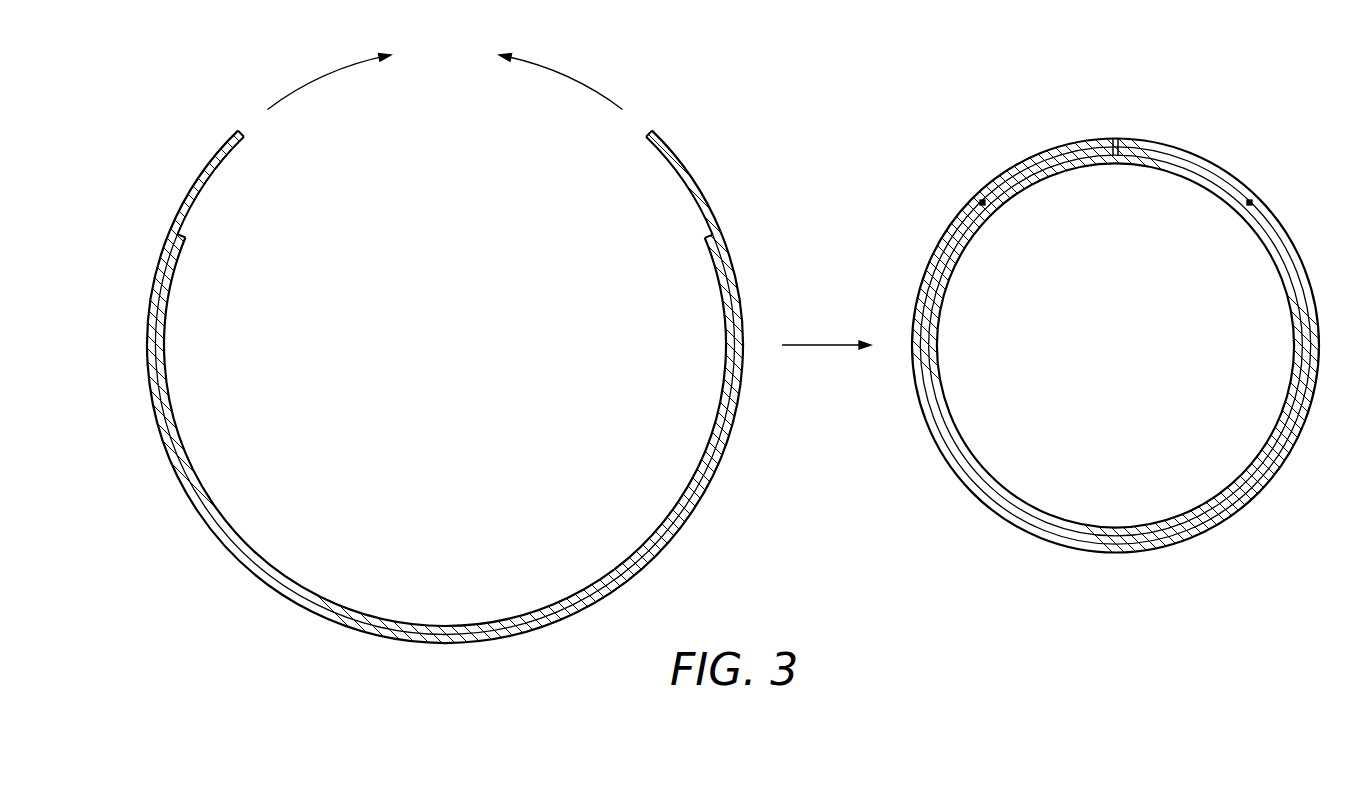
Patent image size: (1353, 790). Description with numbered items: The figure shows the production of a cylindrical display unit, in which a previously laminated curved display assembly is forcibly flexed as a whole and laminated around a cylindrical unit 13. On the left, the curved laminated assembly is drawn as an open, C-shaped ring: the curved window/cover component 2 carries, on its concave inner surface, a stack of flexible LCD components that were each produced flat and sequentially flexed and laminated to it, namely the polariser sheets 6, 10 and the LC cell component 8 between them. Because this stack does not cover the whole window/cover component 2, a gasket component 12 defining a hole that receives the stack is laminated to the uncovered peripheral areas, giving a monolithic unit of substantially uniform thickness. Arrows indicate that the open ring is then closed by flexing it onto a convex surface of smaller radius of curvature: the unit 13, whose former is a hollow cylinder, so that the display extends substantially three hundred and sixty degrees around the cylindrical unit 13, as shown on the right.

The window/cover component 2 is at (445, 387).
The polariser sheet 6 is at (165, 397).
The LC cell component 8 is at (444, 434).
The polariser sheet 10 is at (445, 432).
The gasket component 12 is at (204, 196).
The cylindrical unit 13 is at (963, 443).